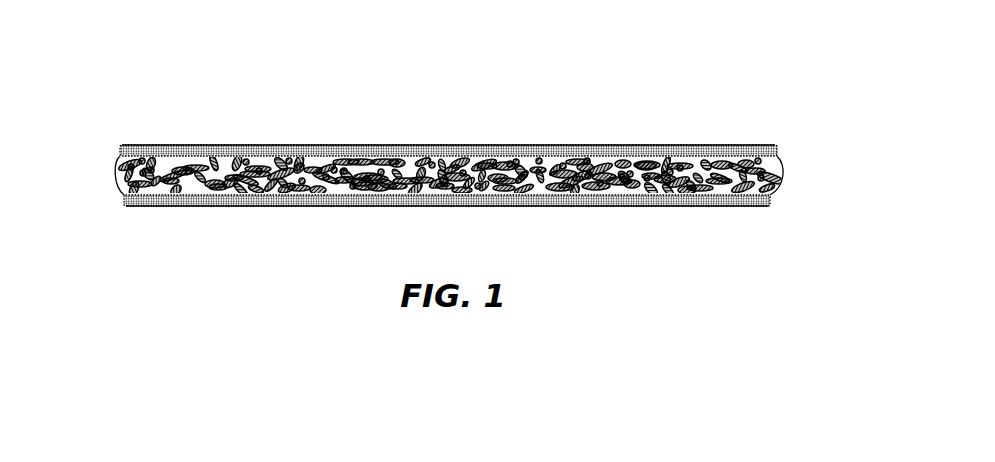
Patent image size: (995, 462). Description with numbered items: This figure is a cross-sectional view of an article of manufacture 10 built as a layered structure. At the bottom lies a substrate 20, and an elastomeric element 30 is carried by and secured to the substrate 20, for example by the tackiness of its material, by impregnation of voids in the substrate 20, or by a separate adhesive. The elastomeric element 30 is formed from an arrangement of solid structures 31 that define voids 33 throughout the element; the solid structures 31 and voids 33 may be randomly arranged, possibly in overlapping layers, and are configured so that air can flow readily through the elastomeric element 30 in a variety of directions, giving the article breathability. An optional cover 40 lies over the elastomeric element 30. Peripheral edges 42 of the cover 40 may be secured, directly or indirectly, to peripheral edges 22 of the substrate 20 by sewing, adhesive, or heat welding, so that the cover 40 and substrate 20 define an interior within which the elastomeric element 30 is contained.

The article of manufacture 10 is at (92, 103).
The substrate 20 is at (172, 206).
The peripheral edges of the substrate 22 is at (770, 201).
The elastomeric element 30 is at (101, 178).
The solid structures 31 is at (268, 183).
The voids 33 is at (332, 185).
The cover 40 is at (165, 157).
The peripheral edges of the cover 42 is at (779, 150).